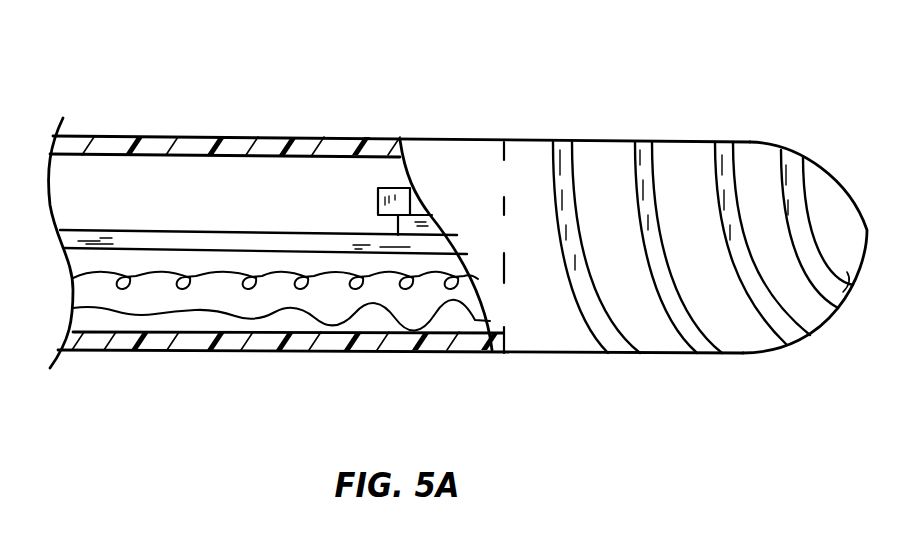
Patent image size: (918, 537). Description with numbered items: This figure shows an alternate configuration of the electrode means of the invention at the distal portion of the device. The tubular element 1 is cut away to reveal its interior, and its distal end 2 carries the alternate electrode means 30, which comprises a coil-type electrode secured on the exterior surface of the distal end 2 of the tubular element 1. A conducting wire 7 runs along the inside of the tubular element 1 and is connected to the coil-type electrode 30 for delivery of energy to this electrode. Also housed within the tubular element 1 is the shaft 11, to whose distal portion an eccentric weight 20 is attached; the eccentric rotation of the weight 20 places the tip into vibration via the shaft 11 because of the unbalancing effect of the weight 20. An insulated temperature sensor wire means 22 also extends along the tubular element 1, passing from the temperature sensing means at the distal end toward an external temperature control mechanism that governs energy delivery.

The tubular element 1 is at (160, 137).
The distal end 2 is at (768, 137).
The conducting wire 7 is at (167, 270).
The shaft 11 is at (280, 233).
The eccentric weight 20 is at (403, 202).
The insulated temperature sensor wire means 22 is at (312, 320).
The coil-type electrode means 30 is at (565, 135).